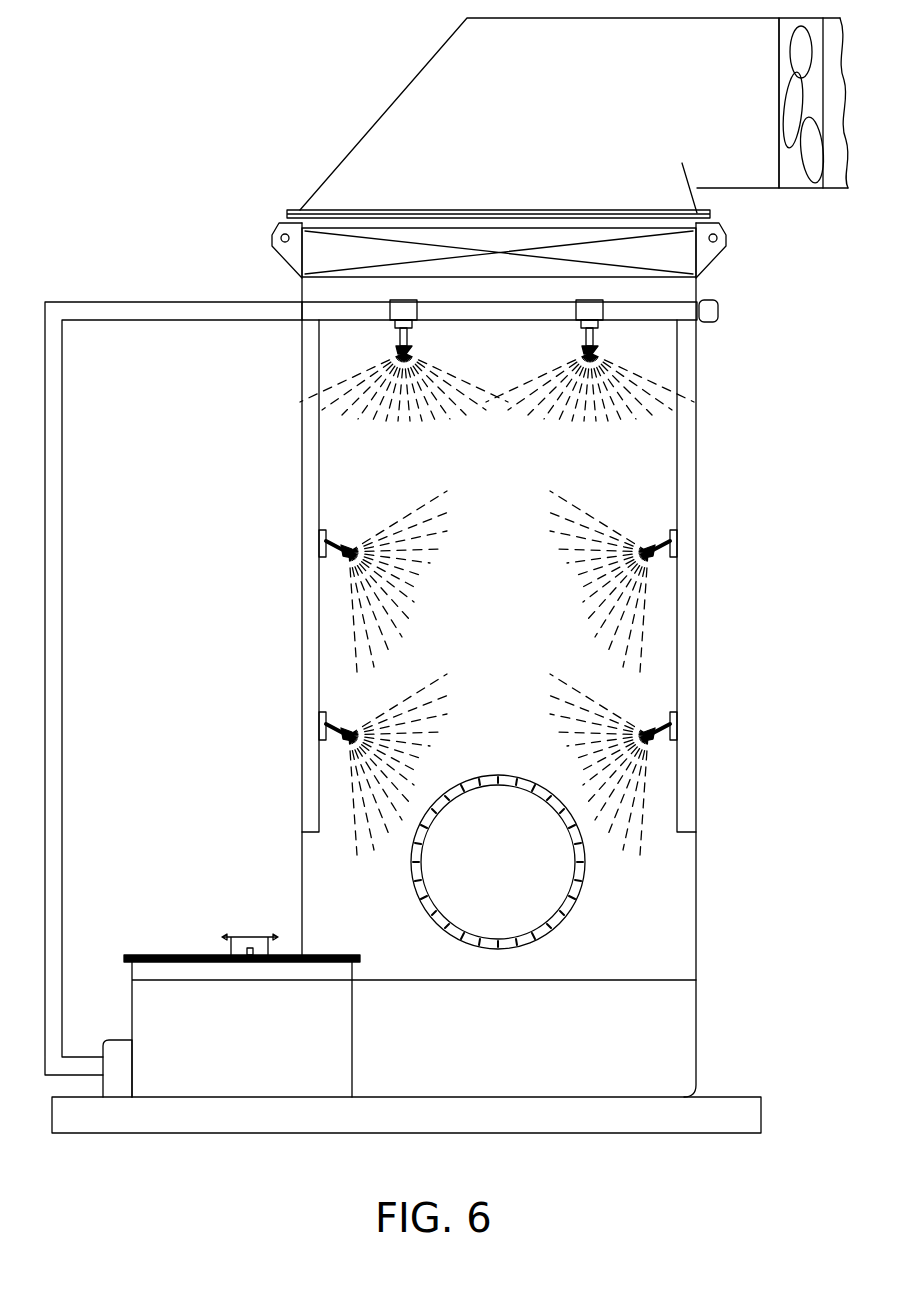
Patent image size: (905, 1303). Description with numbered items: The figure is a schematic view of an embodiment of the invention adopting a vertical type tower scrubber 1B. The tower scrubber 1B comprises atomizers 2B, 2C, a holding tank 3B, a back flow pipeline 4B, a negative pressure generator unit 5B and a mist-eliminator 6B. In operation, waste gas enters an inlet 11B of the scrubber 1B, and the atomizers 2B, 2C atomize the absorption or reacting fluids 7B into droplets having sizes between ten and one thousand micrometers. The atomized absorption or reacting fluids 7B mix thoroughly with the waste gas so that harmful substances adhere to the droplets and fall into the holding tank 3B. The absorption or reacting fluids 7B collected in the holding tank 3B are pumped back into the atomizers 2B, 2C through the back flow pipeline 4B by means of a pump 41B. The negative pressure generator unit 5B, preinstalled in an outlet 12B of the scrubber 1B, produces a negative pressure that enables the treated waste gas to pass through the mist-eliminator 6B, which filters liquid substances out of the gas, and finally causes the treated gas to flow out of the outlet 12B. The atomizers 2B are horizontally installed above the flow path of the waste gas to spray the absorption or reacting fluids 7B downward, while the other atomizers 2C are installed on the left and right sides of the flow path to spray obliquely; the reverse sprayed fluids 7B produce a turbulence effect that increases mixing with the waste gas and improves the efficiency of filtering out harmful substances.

The mist-eliminator 6B is at (316, 256).
The negative pressure generator unit 5B is at (800, 160).
The outlet 12B is at (818, 185).
The atomizers 2B is at (605, 318).
The absorption or reacting fluids 7B is at (642, 408).
The atomizers 2C is at (322, 545).
The tower scrubber 1B is at (698, 676).
The back flow pipeline 4B is at (55, 700).
The pump 41B is at (117, 1055).
The inlet 11B is at (545, 877).
The holding tank 3B is at (670, 1011).